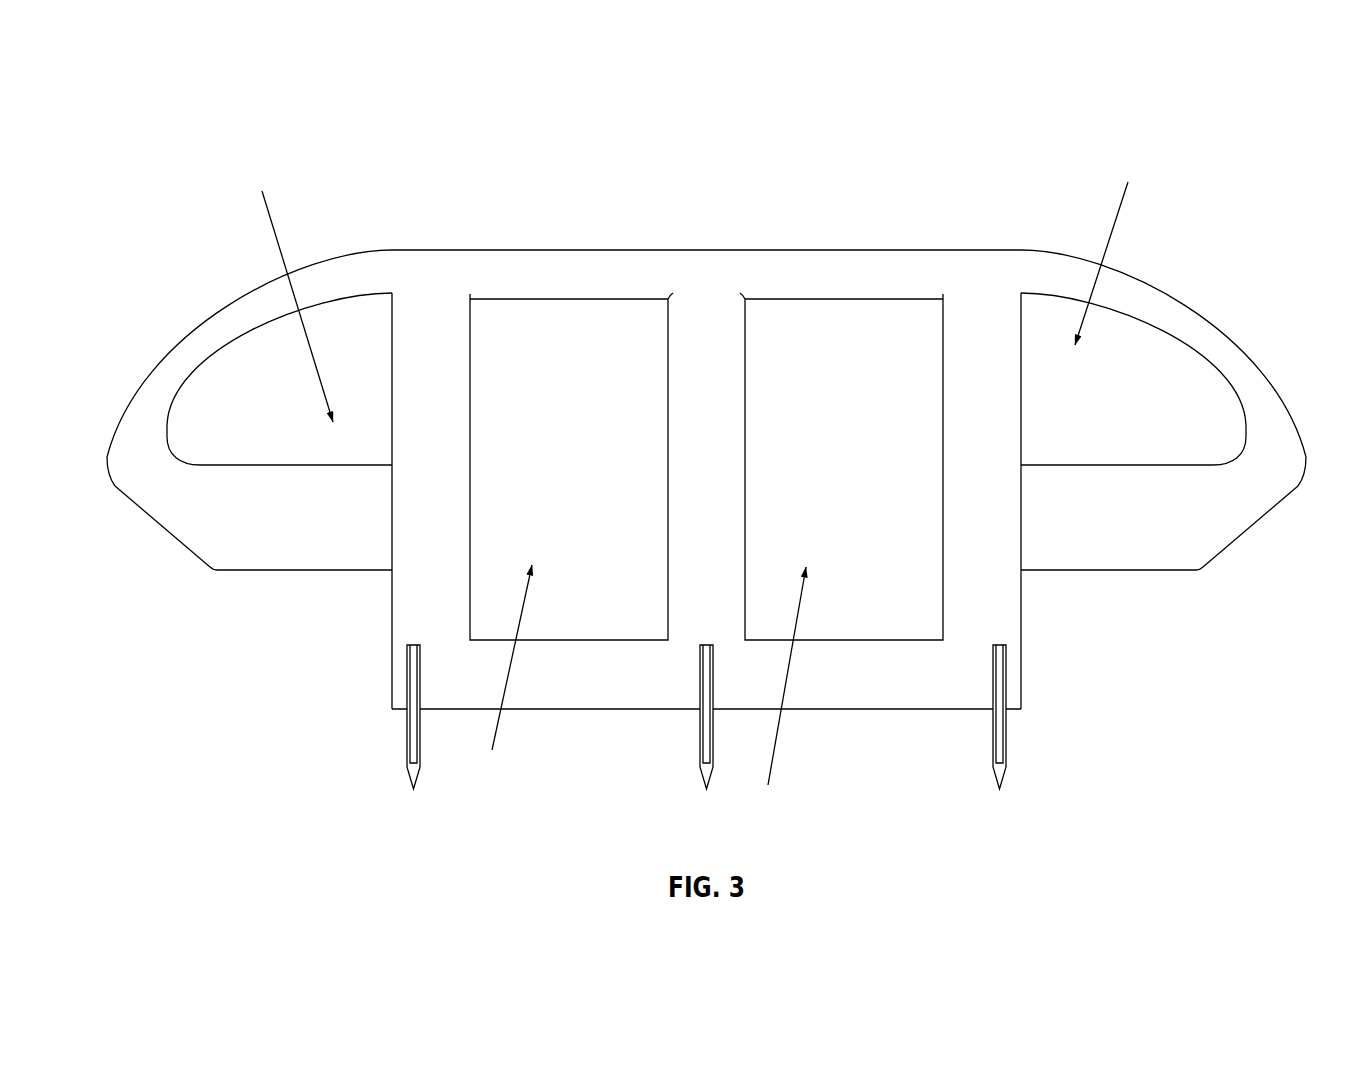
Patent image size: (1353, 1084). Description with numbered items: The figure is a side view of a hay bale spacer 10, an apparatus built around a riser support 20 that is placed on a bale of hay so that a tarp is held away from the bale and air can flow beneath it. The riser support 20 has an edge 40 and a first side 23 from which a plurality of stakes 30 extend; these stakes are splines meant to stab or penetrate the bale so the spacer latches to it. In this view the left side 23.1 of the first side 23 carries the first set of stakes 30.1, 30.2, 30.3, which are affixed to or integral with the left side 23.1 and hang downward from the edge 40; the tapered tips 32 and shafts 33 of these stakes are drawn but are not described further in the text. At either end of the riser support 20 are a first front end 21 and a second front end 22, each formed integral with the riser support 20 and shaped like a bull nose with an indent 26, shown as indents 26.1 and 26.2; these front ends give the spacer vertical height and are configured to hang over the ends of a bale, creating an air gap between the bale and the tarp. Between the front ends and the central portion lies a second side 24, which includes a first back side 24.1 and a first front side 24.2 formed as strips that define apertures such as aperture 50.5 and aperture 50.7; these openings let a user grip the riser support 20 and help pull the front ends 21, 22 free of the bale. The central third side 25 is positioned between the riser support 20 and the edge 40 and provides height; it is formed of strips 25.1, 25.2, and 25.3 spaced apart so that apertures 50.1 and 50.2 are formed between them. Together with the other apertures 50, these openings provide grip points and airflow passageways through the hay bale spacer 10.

The hay bale spacer 10 is at (703, 484).
The riser support 20 is at (706, 448).
The first front end 21 is at (1163, 363).
The second front end 22 is at (249, 368).
The first side 23 is at (706, 769).
The left side 23.1 is at (706, 769).
The second side 24 is at (695, 557).
The first back side 24.1 is at (271, 557).
The first front side 24.2 is at (1130, 551).
The third side 25 is at (724, 501).
The strip 25.1 is at (550, 466).
The strip 25.2 is at (821, 466).
The strip 25.3 is at (897, 501).
The indent 26 is at (703, 606).
The indent 26.1 is at (151, 606).
The indent 26.2 is at (1252, 600).
The stakes 30 is at (657, 757).
The stake 30.1 is at (283, 757).
The stake 30.2 is at (599, 726).
The stake 30.3 is at (1080, 745).
The spike tip 32 is at (353, 818).
The spike shaft 33 is at (341, 704).
The edge 40 is at (1002, 659).
The apertures 50 is at (693, 484).
The aperture 50.1 is at (548, 665).
The aperture 50.2 is at (824, 683).
The aperture 50.5 is at (240, 299).
The aperture 50.7 is at (1157, 256).